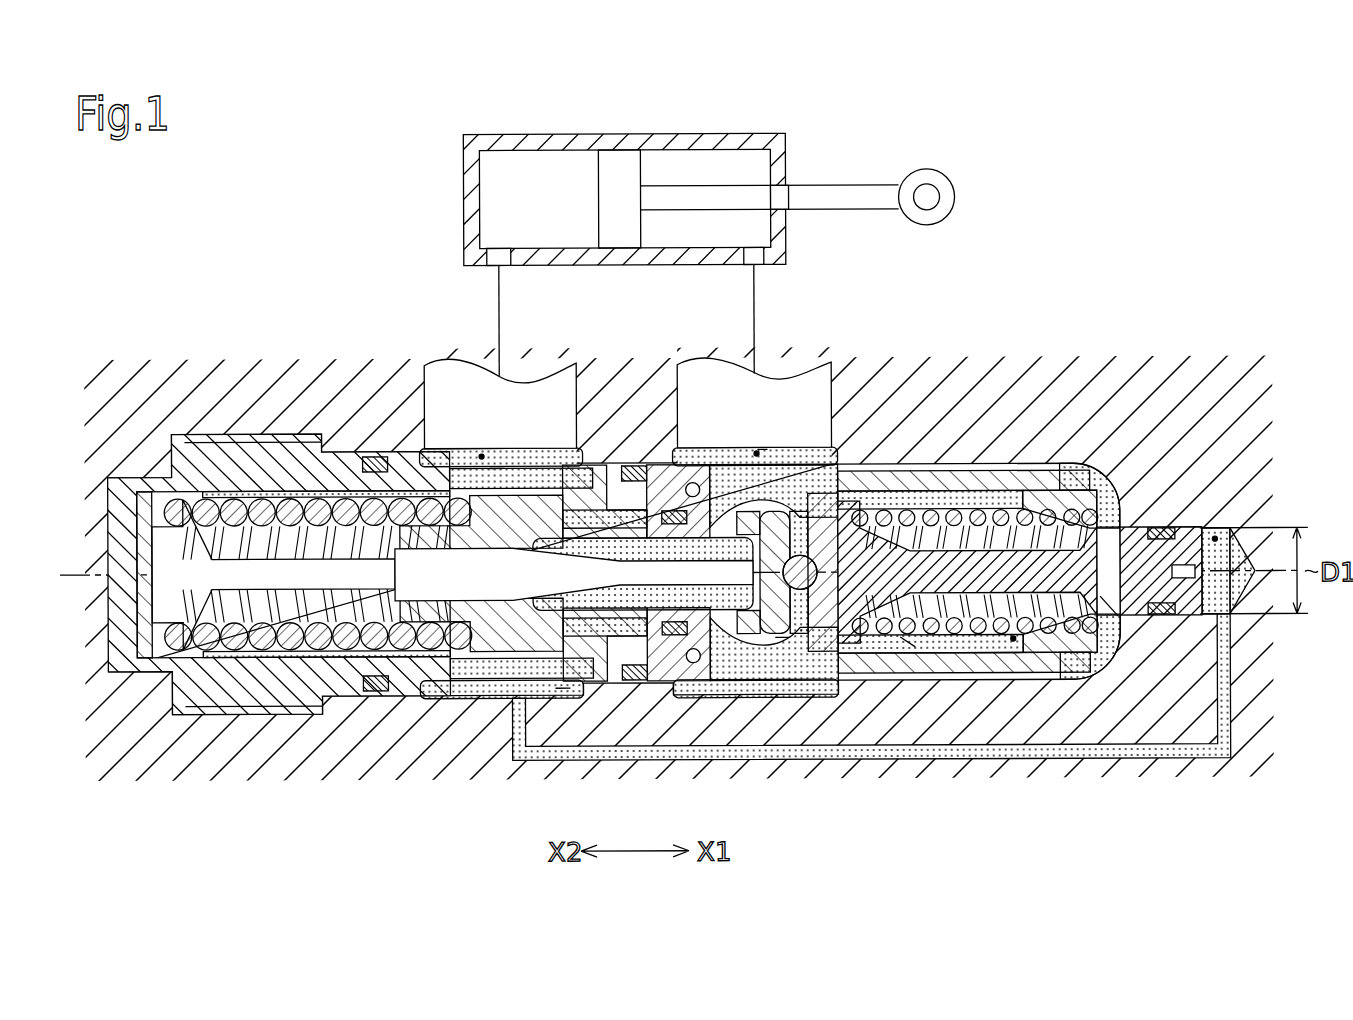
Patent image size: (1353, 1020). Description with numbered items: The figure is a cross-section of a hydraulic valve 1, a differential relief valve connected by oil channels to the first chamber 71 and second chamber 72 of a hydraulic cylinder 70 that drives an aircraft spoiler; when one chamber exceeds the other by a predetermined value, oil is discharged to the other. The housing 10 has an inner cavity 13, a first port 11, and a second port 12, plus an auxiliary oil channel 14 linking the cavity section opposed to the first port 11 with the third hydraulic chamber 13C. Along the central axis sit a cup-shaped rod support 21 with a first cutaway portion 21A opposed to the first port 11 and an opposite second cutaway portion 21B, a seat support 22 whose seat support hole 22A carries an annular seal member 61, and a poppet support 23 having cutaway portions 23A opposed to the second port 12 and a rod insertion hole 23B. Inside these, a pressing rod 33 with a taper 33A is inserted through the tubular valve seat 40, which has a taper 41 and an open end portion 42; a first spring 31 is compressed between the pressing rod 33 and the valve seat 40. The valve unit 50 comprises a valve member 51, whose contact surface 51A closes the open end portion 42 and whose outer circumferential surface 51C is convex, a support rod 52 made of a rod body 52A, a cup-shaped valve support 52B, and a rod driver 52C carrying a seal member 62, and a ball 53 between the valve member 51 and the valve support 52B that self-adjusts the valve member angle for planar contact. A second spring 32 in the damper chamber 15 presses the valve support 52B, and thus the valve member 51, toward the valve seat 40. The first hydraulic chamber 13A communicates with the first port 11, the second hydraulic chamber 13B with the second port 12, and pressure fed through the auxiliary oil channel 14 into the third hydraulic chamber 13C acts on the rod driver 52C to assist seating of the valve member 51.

The hydraulic valve 1 is at (1231, 244).
The housing 10 is at (160, 388).
The first port 11 is at (428, 375).
The second port 12 is at (830, 375).
The inner cavity 13 is at (480, 705).
The first hydraulic chamber 13A is at (482, 458).
The second hydraulic chamber 13B is at (762, 450).
The third hydraulic chamber 13C is at (1215, 543).
The auxiliary oil channel 14 is at (790, 764).
The damper chamber 15 is at (1013, 642).
The rod support 21 is at (282, 722).
The first cutaway portion 21A is at (497, 472).
The second cutaway portion 21B is at (562, 692).
The seat support 22 is at (622, 690).
The seat support hole 22A is at (668, 688).
The poppet support 23 is at (985, 688).
The cutaway portions 23A is at (798, 482).
The rod insertion hole 23B is at (1118, 620).
The first spring 31 is at (290, 548).
The second spring 32 is at (1010, 504).
The pressing rod 33 is at (283, 553).
The taper 33A is at (553, 495).
The valve seat 40 is at (620, 520).
The taper 41 is at (530, 583).
The open end portion 42 is at (757, 456).
The valve unit 50 is at (965, 545).
The valve member 51 is at (808, 603).
The contact surface 51A is at (717, 492).
The outer circumferential surface 51C is at (780, 692).
The support rod 52 is at (908, 650).
The rod body 52A is at (1062, 494).
The valve support 52B is at (883, 482).
The rod driver 52C is at (1133, 540).
The ball 53 is at (822, 568).
The seal member 61 is at (738, 690).
The seal member 62 is at (1168, 619).
The hydraulic cylinder 70 is at (649, 199).
The first chamber 71 is at (548, 262).
The second chamber 72 is at (693, 262).